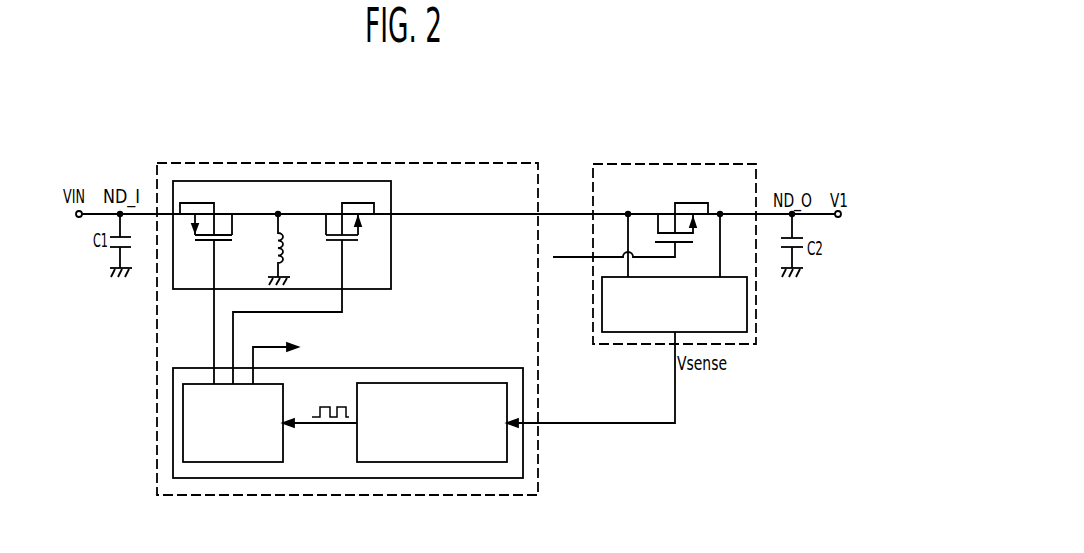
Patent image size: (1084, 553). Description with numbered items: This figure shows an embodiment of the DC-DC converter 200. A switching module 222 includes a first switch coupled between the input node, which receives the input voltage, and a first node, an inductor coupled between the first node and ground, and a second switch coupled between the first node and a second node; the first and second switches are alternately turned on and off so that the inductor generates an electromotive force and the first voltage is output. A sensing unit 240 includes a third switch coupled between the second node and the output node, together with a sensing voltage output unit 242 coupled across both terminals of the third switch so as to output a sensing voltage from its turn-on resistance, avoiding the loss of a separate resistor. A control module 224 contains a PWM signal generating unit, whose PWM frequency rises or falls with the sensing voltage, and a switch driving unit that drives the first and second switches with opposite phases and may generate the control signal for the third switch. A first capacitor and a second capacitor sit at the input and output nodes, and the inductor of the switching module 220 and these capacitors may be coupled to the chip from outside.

The DC-DC converter 200 is at (667, 83).
The switching module 220 is at (497, 163).
The switching module 222 is at (391, 265).
The control module 224 is at (443, 368).
The sensing unit 240 is at (693, 164).
The sensing voltage output unit 242 is at (747, 310).